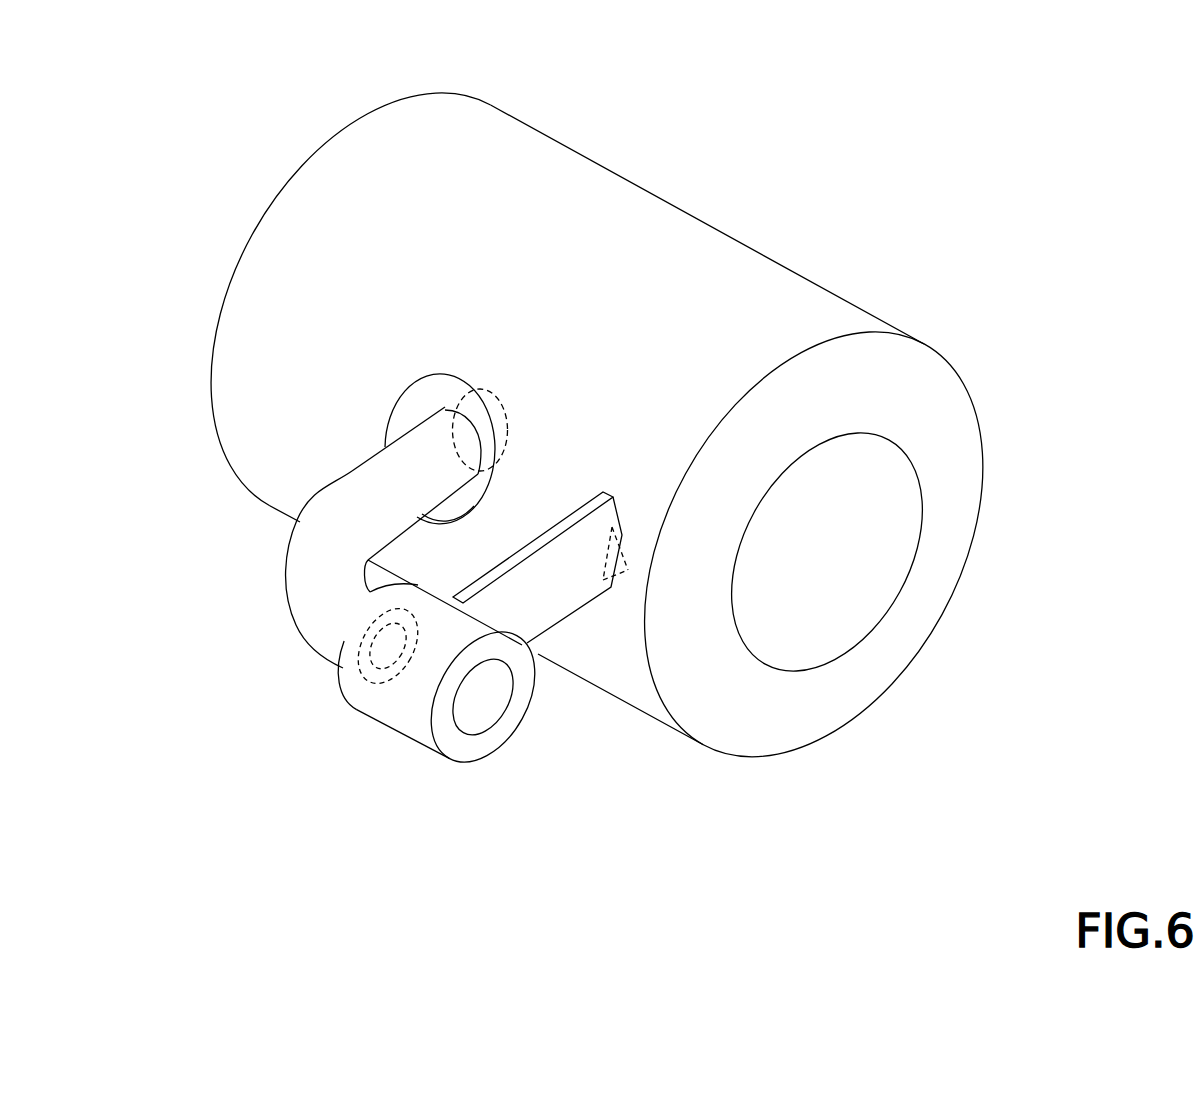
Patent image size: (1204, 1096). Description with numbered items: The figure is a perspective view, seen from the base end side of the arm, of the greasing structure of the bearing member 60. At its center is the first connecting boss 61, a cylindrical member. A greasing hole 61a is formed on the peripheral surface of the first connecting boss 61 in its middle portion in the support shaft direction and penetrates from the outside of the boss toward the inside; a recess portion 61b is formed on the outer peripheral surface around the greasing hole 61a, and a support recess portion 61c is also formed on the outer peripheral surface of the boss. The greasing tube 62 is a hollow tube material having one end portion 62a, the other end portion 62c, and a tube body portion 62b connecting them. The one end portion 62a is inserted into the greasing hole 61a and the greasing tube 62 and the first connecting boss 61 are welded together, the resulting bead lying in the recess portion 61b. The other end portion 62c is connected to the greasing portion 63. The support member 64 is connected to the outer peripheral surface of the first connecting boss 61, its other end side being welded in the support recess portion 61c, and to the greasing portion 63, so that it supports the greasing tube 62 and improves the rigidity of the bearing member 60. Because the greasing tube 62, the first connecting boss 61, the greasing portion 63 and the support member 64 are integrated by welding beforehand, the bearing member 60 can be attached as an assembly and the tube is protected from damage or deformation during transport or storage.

The bearing member 60 is at (858, 101).
The first connecting boss 61 is at (217, 441).
The greasing hole 61a is at (450, 402).
The recess portion 61b is at (397, 425).
The support recess portion 61c is at (603, 537).
The greasing tube 62 is at (257, 609).
The one end portion 62a is at (483, 472).
The tube body portion 62b is at (295, 525).
The other end portion 62c is at (362, 673).
The greasing portion 63 is at (380, 722).
The support member 64 is at (565, 620).